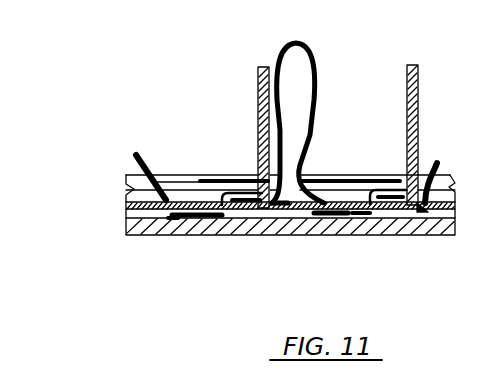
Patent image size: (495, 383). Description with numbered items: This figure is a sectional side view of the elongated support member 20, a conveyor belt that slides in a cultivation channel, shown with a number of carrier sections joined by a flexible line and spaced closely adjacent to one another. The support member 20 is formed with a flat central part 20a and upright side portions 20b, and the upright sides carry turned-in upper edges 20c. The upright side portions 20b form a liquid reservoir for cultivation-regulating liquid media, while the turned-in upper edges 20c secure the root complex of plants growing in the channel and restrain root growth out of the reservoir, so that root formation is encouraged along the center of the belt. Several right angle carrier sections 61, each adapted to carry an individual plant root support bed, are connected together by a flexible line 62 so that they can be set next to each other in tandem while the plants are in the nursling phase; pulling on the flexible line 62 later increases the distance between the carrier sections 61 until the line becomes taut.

The elongated support member 20 is at (270, 236).
The flat central part 20a is at (395, 226).
The upright side portions 20b is at (156, 216).
The turned-in upper edges 20c is at (198, 176).
The right angle carrier sections 61 is at (258, 118).
The flexible line 62 is at (309, 47).